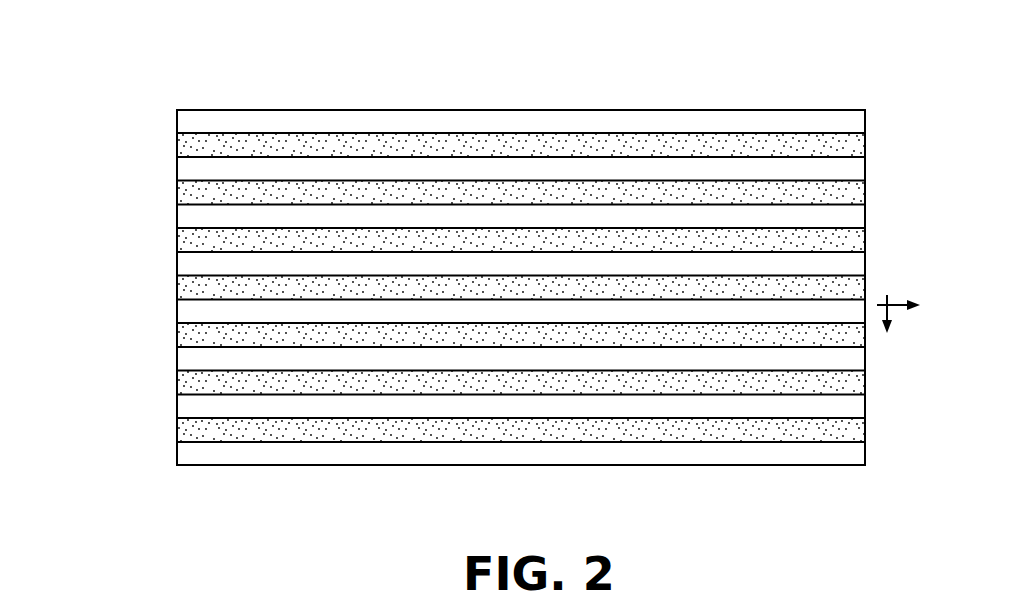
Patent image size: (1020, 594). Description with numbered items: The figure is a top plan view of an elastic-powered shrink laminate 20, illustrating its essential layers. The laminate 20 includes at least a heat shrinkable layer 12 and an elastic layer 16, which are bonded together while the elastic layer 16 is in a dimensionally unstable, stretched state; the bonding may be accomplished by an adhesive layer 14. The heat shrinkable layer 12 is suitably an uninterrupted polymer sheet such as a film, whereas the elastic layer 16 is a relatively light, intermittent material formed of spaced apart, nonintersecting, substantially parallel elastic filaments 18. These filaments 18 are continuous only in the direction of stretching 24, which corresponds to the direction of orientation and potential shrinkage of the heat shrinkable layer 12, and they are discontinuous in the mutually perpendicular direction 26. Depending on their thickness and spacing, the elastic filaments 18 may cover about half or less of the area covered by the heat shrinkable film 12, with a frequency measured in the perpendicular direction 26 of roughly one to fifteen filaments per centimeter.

The heat shrinkable layer 12 is at (457, 151).
The adhesive layer 14 is at (190, 146).
The elastic layer 16 is at (865, 110).
The elastic filaments 18 is at (185, 218).
The elastic-powered shrink laminate 20 is at (881, 486).
The direction of stretching 24 is at (914, 305).
The mutually perpendicular direction 26 is at (889, 329).